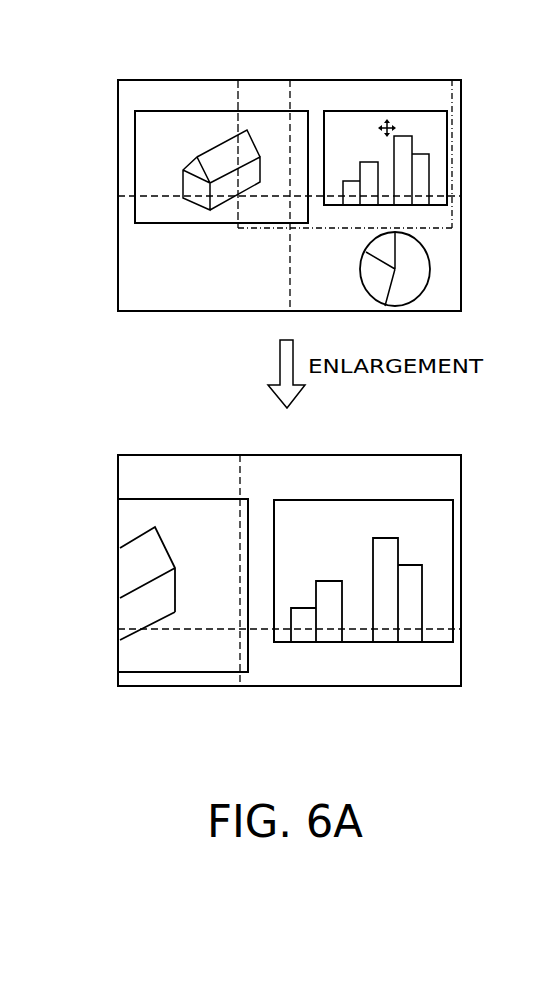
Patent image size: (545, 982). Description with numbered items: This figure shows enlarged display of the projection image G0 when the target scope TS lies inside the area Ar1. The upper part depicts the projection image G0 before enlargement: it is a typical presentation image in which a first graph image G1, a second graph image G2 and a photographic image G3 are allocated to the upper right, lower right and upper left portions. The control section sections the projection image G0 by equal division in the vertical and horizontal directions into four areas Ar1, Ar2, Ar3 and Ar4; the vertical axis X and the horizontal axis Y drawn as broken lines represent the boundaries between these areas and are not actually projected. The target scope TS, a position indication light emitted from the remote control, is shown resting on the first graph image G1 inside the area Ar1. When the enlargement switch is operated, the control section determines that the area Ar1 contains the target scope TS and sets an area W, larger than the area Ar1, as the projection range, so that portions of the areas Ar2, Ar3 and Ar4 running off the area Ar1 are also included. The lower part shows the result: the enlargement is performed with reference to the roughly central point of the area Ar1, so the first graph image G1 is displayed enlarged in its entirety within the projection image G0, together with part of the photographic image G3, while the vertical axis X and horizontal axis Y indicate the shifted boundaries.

The projection image G0 is at (458, 76).
The first graph image G1 is at (455, 160).
The second graph image G2 is at (440, 263).
The photographic image G3 is at (130, 150).
The target scope TS is at (395, 118).
The area W is at (238, 97).
The vertical axis X is at (461, 193).
The horizontal axis Y is at (290, 97).
The area Ar1 is at (314, 94).
The area Ar2 is at (314, 300).
The area Ar3 is at (141, 300).
The area Ar4 is at (141, 94).